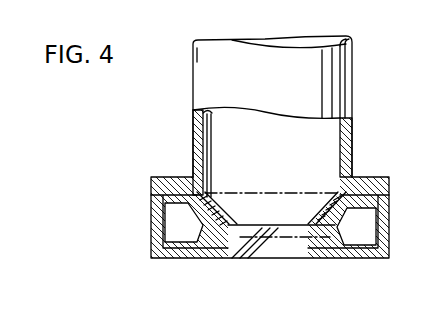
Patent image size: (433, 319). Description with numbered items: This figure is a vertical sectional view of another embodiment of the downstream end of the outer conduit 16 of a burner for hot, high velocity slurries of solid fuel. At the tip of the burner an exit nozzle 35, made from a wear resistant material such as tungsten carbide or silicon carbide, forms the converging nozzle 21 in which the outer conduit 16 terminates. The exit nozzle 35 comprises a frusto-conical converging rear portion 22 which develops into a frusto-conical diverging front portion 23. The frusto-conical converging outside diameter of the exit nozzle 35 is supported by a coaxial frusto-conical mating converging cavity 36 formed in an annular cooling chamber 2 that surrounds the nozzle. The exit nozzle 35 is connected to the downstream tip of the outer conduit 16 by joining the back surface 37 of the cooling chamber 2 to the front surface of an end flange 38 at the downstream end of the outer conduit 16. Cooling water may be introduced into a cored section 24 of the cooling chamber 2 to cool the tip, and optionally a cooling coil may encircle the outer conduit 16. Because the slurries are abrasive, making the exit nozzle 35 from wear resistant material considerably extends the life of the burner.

The annular cooling chamber 2 is at (390, 228).
The outer conduit 16 is at (348, 70).
The converging nozzle 21 is at (249, 206).
The frusto-conical converging rear portion 22 is at (310, 198).
The frusto-conical diverging front portion 23 is at (256, 248).
The cored section 24 is at (360, 233).
The exit nozzle 35 is at (227, 197).
The mating converging cavity 36 is at (188, 240).
The back surface 37 is at (162, 228).
The end flange 38 is at (367, 177).